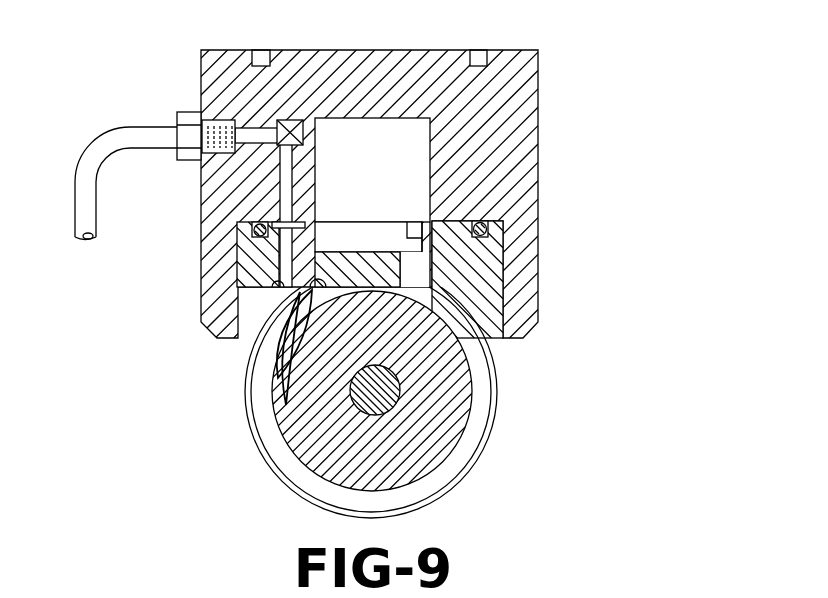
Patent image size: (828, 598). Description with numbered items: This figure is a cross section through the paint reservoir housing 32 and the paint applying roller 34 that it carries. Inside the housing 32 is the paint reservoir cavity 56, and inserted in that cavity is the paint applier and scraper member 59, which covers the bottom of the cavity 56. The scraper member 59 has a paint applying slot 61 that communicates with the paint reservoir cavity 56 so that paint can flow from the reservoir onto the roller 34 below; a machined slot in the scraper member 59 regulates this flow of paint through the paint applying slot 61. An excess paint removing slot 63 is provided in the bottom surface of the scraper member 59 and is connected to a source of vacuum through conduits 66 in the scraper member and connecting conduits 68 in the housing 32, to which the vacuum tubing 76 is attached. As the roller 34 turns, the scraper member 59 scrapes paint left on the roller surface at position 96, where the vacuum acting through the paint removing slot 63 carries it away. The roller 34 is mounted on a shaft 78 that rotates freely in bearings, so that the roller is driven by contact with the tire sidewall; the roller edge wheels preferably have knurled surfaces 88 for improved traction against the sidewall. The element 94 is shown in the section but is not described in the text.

The paint reservoir housing 32 is at (500, 138).
The paint applying roller 34 is at (485, 408).
The paint reservoir cavity 56 is at (375, 158).
The paint applier and scraper member 59 is at (482, 298).
The paint applying slot 61 is at (415, 272).
The excess paint removing slot 63 is at (300, 290).
The conduits 66 is at (288, 243).
The connecting conduits 68 is at (290, 165).
The vacuum tubing 76 is at (122, 143).
The shaft 78 is at (383, 397).
The knurled surfaces 88 is at (278, 478).
The arm 94 is at (290, 404).
The position 96 is at (275, 377).